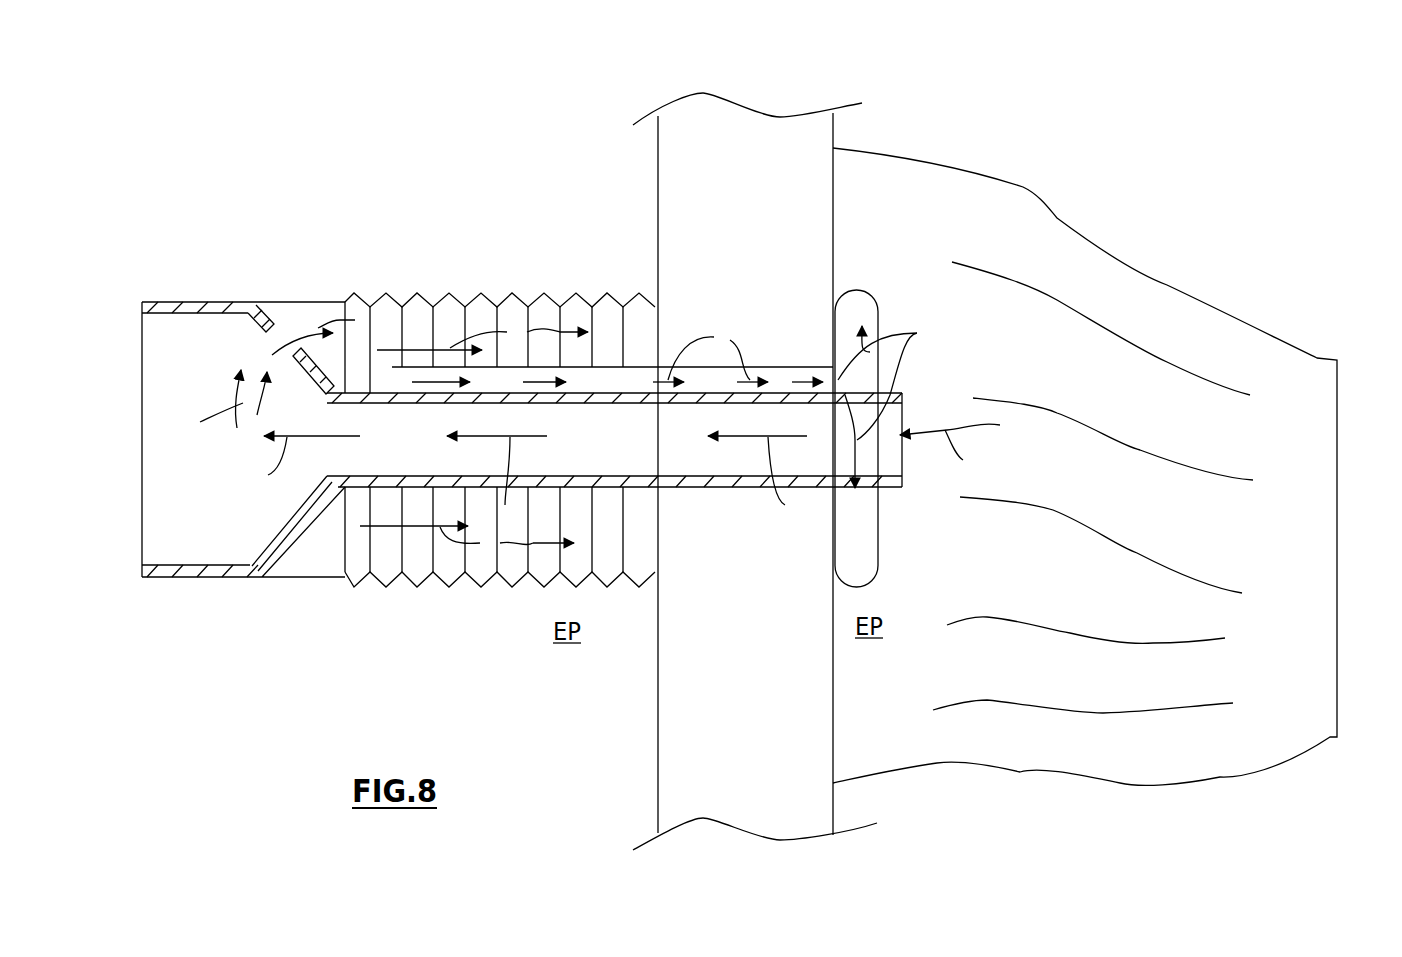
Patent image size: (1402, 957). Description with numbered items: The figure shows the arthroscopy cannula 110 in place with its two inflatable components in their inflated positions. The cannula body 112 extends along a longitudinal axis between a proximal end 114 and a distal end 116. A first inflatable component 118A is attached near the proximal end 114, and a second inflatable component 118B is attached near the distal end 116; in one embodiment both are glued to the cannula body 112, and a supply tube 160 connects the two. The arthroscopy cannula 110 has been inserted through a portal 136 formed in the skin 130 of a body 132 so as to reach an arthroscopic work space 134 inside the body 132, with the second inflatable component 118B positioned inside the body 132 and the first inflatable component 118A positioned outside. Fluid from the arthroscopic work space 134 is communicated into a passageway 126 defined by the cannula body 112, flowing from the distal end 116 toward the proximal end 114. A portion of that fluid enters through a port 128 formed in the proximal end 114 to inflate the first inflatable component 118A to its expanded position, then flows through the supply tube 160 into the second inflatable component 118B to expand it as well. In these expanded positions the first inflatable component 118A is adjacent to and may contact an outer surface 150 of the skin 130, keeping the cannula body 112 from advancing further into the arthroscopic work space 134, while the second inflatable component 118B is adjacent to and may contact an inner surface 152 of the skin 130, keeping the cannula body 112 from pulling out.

The arthroscopy cannula 110 is at (285, 238).
The cannula body 112 is at (236, 588).
The proximal end 114 is at (237, 294).
The distal end 116 is at (885, 492).
The first inflatable component 118A is at (427, 583).
The second inflatable component 118B is at (860, 555).
The passageway 126 is at (352, 452).
The port 128 is at (278, 337).
The skin 130 is at (698, 120).
The body 132 is at (952, 145).
The arthroscopic work space 134 is at (1155, 417).
The portal 136 is at (692, 487).
The outer surface 150 is at (657, 735).
The inner surface 152 is at (833, 752).
The supply tube 160 is at (783, 367).